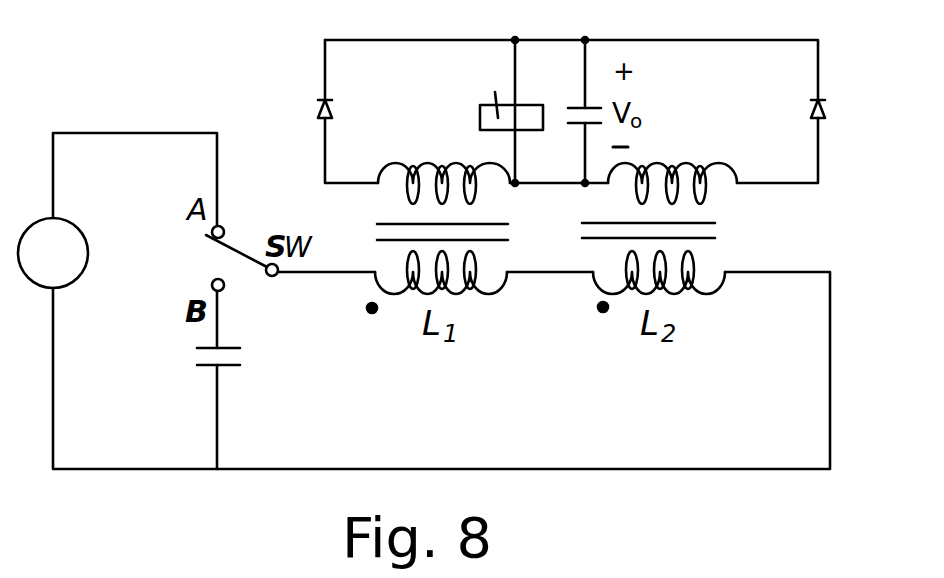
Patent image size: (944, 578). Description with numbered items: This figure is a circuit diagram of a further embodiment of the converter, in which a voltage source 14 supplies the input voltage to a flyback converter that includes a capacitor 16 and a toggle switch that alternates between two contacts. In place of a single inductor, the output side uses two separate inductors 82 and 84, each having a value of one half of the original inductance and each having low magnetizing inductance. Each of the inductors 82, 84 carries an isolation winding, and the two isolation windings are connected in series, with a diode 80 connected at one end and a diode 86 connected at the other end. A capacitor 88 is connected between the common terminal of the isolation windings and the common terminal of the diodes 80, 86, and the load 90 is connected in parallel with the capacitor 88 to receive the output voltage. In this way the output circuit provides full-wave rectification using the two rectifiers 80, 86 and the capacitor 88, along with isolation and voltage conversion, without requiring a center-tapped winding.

The voltage source 14 is at (72, 223).
The capacitor 16 is at (212, 366).
The diode 80 is at (318, 108).
The inductor 82 is at (438, 141).
The inductor 84 is at (705, 188).
The diode 86 is at (810, 106).
The capacitor 88 is at (575, 104).
The load 90 is at (529, 131).